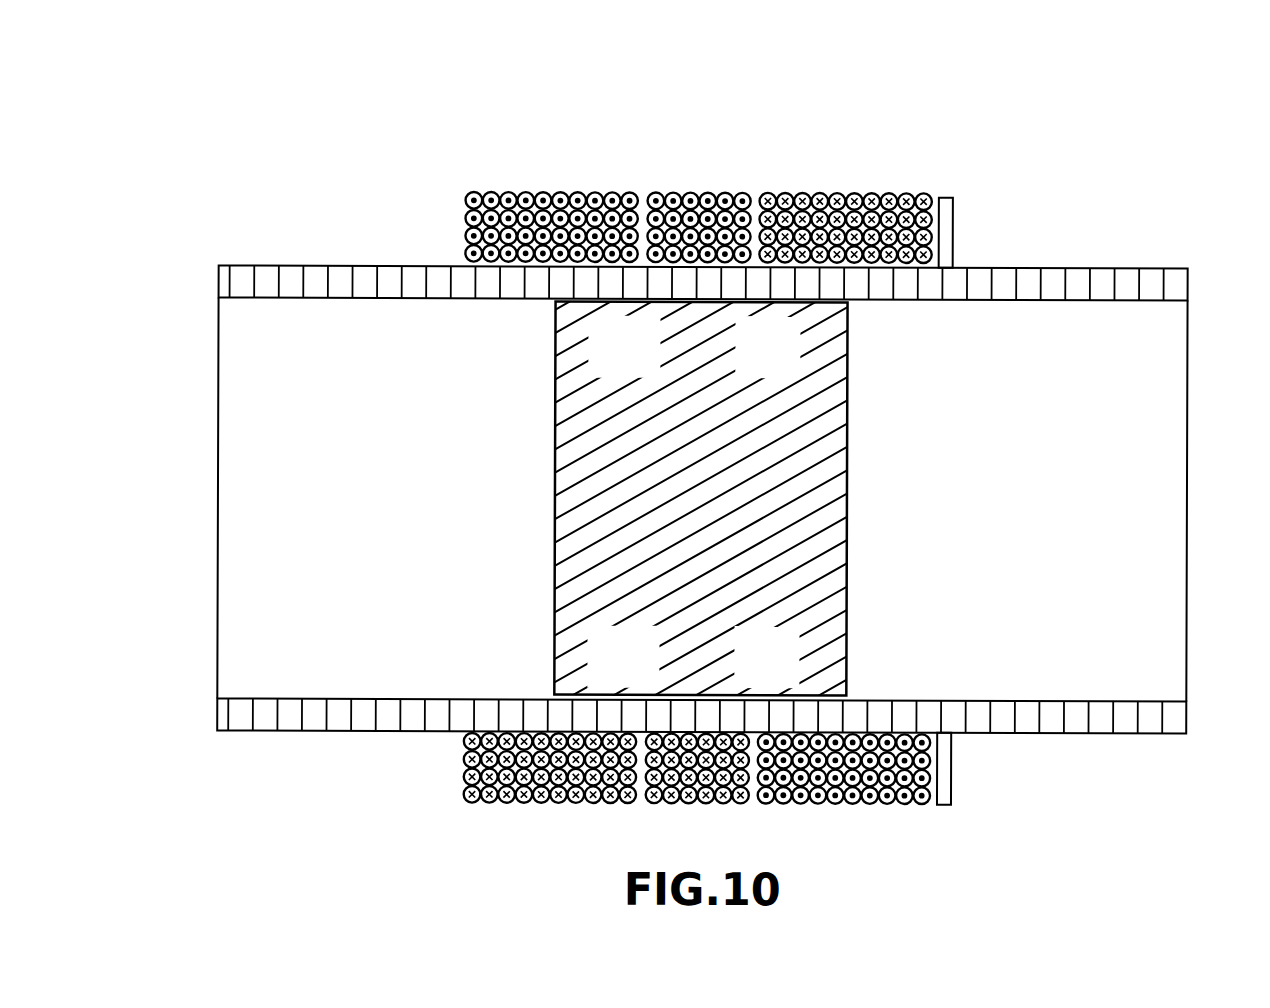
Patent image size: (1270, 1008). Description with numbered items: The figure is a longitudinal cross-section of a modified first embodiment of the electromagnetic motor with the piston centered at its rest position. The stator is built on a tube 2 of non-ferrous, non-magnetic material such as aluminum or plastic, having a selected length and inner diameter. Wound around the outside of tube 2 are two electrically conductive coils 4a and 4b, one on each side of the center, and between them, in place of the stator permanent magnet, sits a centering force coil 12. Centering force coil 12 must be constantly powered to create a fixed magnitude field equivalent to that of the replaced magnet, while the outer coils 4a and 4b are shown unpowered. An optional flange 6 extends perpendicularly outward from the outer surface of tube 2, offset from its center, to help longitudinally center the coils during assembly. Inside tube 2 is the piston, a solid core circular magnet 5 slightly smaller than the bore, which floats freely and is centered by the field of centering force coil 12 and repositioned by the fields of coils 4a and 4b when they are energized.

The tube 2 is at (367, 265).
The coil 4a is at (517, 190).
The coil 4b is at (885, 193).
The centering force coil 12 is at (677, 187).
The magnet 5 is at (645, 506).
The flange 6 is at (949, 241).